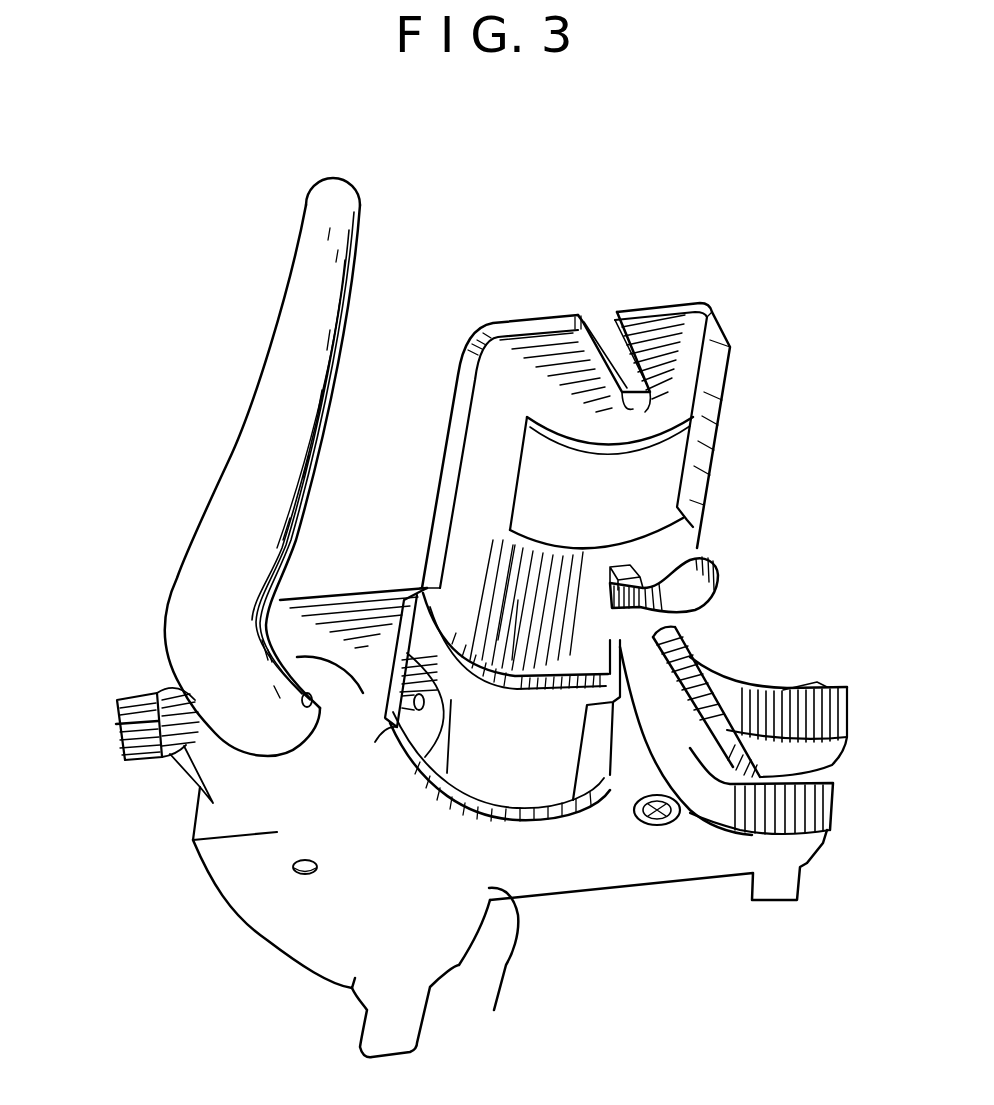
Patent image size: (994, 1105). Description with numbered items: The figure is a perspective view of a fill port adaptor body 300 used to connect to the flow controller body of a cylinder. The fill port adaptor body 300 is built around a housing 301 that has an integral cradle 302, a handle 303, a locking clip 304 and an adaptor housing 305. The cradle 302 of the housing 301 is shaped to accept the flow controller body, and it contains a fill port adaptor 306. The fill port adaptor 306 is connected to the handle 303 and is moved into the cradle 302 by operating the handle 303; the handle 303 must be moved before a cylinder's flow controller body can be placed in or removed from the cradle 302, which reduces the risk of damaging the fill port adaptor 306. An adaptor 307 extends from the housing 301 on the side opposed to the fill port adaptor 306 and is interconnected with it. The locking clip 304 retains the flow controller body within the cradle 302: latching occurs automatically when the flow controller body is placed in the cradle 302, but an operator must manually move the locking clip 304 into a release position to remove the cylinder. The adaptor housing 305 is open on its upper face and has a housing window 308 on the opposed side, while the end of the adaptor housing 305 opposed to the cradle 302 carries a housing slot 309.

The fill port adaptor body 300 is at (700, 234).
The housing 301 is at (493, 1008).
The cradle 302 is at (588, 813).
The handle 303 is at (207, 587).
The locking clip 304 is at (688, 690).
The adaptor housing 305 is at (717, 398).
The fill port adaptor 306 is at (478, 684).
The adaptor 307 is at (147, 697).
The housing window 308 is at (532, 475).
The housing slot 309 is at (600, 330).